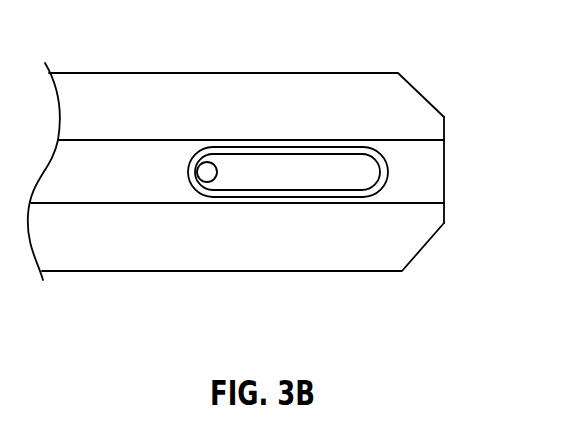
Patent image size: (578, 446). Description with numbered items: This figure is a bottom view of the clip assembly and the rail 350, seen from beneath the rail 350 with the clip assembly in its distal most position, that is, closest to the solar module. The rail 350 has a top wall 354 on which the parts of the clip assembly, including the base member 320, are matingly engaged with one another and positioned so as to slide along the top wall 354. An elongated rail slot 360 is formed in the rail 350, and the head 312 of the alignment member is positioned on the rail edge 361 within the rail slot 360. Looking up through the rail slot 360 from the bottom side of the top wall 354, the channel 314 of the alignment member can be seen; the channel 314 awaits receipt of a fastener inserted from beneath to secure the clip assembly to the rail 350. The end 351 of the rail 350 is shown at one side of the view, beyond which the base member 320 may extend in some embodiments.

The rail 350 is at (423, 92).
The end of the rail 351 is at (445, 173).
The top wall of the rail 354 is at (92, 158).
The channel 314 is at (208, 170).
The head of the alignment member 312 is at (223, 172).
The base member 320 is at (298, 172).
The rail slot 360 is at (353, 172).
The rail edge 361 is at (357, 196).